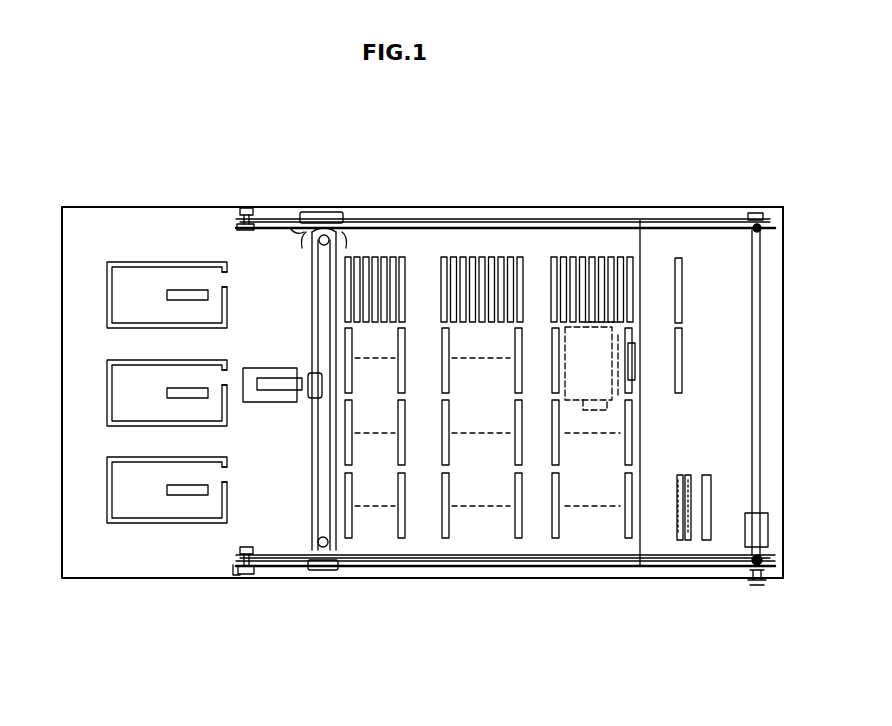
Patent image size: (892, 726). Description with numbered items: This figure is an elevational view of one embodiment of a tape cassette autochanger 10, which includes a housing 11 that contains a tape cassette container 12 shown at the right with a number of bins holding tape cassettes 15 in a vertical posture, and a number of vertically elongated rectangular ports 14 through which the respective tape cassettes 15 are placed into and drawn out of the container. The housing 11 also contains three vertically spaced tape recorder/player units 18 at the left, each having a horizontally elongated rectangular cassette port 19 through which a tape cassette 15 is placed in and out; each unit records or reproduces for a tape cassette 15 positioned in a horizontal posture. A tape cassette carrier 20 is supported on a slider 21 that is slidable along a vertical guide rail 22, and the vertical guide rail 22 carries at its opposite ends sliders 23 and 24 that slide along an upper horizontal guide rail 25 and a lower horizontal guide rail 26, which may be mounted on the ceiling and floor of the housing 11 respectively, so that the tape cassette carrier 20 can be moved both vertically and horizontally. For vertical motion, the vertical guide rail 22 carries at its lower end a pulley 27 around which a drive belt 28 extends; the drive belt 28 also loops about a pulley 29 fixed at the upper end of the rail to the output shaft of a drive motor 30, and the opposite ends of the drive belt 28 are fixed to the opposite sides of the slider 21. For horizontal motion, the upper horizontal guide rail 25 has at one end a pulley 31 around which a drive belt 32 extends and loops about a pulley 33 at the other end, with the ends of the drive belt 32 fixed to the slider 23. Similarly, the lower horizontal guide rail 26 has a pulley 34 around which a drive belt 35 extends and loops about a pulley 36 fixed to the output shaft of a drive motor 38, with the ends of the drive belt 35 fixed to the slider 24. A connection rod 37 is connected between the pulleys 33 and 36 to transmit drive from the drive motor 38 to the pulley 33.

The tape cassette autochanger 10 is at (247, 204).
The housing 11 is at (784, 418).
The tape cassette container 12 is at (428, 245).
The vertically elongated rectangular ports 14 is at (684, 340).
The tape cassettes 15 is at (393, 257).
The tape recorder/player units 18 is at (140, 268).
The horizontally elongated rectangular cassette port 19 is at (222, 276).
The tape cassette carrier 20 is at (265, 374).
The slider 21 is at (310, 372).
The vertical guide rail 22 is at (313, 440).
The slider 23 is at (318, 212).
The slider 24 is at (325, 571).
The upper horizontal guide rail 25 is at (620, 215).
The lower horizontal guide rail 26 is at (600, 570).
The pulley 27 is at (328, 545).
The drive belt 28 is at (318, 264).
The pulley 29 is at (312, 243).
The drive motor 30 is at (297, 232).
The pulley 31 is at (246, 228).
The drive belt 32 is at (533, 240).
The pulley 33 is at (762, 232).
The pulley 34 is at (248, 548).
The drive belt 35 is at (470, 558).
The pulley 36 is at (764, 560).
The connection rod 37 is at (762, 372).
The drive motor 38 is at (768, 530).